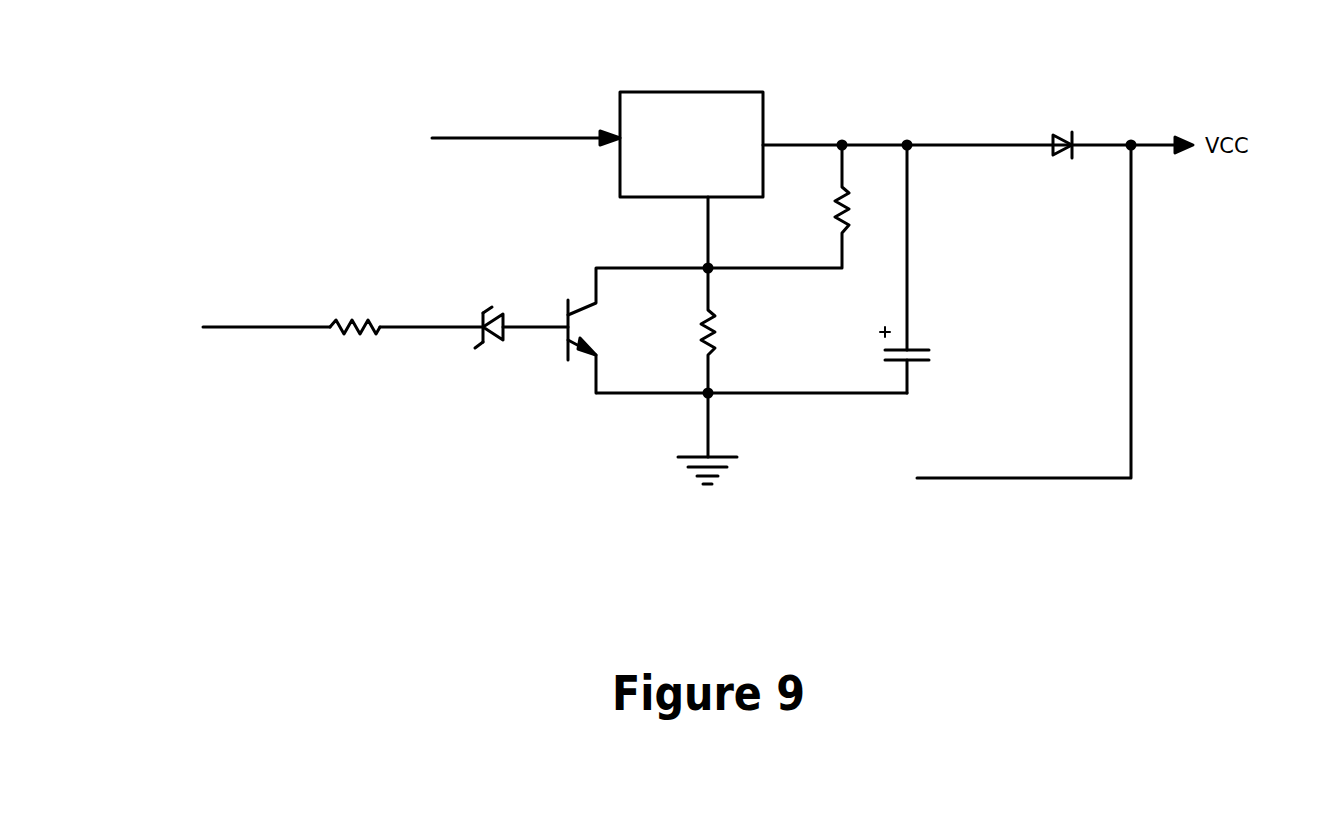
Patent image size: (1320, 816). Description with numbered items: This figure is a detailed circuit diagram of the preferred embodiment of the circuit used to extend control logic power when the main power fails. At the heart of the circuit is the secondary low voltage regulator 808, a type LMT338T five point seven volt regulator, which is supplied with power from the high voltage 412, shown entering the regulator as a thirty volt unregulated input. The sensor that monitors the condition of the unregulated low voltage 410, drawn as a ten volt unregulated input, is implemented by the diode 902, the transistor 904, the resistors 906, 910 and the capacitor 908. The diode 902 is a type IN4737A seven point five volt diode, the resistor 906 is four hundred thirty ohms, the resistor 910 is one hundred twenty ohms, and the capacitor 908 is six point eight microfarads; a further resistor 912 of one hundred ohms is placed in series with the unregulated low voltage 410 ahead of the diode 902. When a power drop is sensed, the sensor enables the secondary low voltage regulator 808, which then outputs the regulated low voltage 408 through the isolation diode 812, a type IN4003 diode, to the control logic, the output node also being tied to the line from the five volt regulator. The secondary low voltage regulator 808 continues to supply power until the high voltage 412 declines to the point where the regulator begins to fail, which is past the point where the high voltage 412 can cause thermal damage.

The regulated low voltage 408 is at (1128, 367).
The unregulated low voltage 410 is at (272, 327).
The high voltage 412 is at (525, 140).
The secondary low voltage regulator 808 is at (647, 100).
The isolation diode 812 is at (1055, 132).
The diode 902 is at (493, 340).
The transistor 904 is at (563, 312).
The resistor 906 is at (720, 350).
The capacitor 908 is at (913, 350).
The resistor 910 is at (836, 203).
The resistor 912 is at (340, 327).